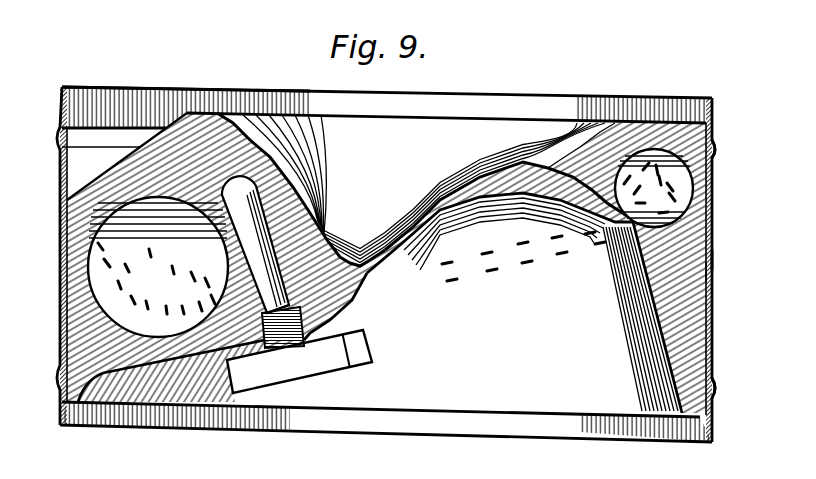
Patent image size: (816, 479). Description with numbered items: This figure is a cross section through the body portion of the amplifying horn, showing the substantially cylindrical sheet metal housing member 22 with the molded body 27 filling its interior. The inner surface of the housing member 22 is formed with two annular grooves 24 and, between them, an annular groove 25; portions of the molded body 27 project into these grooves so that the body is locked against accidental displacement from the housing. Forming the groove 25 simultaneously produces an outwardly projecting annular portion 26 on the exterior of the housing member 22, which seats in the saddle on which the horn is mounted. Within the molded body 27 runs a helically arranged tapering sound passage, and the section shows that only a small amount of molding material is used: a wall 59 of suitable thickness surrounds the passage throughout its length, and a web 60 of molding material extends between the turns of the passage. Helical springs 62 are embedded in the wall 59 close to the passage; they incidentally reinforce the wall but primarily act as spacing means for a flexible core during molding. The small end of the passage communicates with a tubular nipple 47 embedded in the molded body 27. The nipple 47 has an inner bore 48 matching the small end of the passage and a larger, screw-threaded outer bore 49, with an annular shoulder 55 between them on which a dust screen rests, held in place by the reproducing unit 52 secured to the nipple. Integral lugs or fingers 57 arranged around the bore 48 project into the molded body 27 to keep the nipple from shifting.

The housing member 22 is at (715, 198).
The annular grooves 24 is at (715, 147).
The annular groove 25 is at (716, 272).
The outwardly projecting annular portion 26 is at (715, 265).
The molded body 27 is at (200, 127).
The tubular nipple 47 is at (345, 322).
The bore 48 is at (297, 338).
The bore 49 is at (277, 340).
The reproducing unit 52 is at (247, 377).
The annular shoulder 55 is at (320, 335).
The lugs or fingers 57 is at (250, 290).
The wall 59 is at (90, 183).
The web 60 is at (507, 177).
The helical springs 62 is at (133, 297).